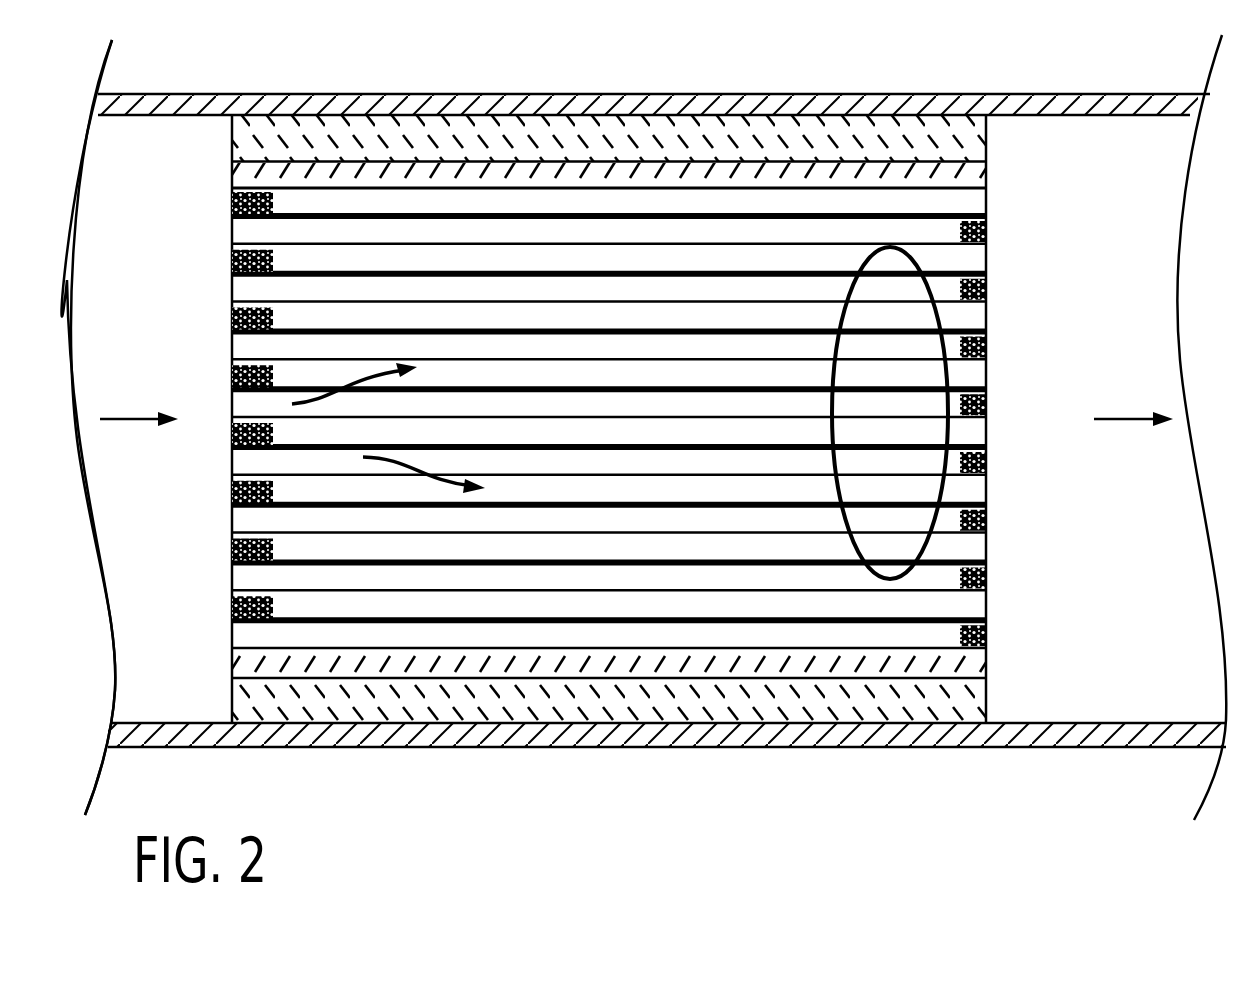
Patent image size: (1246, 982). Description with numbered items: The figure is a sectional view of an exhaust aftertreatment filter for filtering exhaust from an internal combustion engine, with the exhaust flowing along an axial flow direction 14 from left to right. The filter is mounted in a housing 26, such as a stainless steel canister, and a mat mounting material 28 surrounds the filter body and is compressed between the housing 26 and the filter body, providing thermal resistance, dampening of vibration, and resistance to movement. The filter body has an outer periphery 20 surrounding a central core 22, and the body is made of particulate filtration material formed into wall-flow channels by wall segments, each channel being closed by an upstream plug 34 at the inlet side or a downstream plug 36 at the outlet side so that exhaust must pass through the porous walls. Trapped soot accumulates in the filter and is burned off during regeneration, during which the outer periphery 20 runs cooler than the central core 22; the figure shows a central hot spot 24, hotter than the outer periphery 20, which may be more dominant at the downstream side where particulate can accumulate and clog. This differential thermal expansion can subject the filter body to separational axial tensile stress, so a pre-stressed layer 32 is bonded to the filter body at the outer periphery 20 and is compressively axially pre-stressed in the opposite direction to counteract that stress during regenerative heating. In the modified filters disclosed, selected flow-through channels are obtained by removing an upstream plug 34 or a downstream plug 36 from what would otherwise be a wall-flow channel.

The axial flow direction 14 is at (137, 419).
The outer periphery 20 is at (958, 196).
The central core 22 is at (975, 370).
The central hot spot 24 is at (940, 319).
The housing 26 is at (244, 102).
The mat mounting material 28 is at (422, 127).
The pre-stressed layer 32 is at (256, 178).
The upstream plug 34 is at (230, 607).
The downstream plug 36 is at (984, 633).